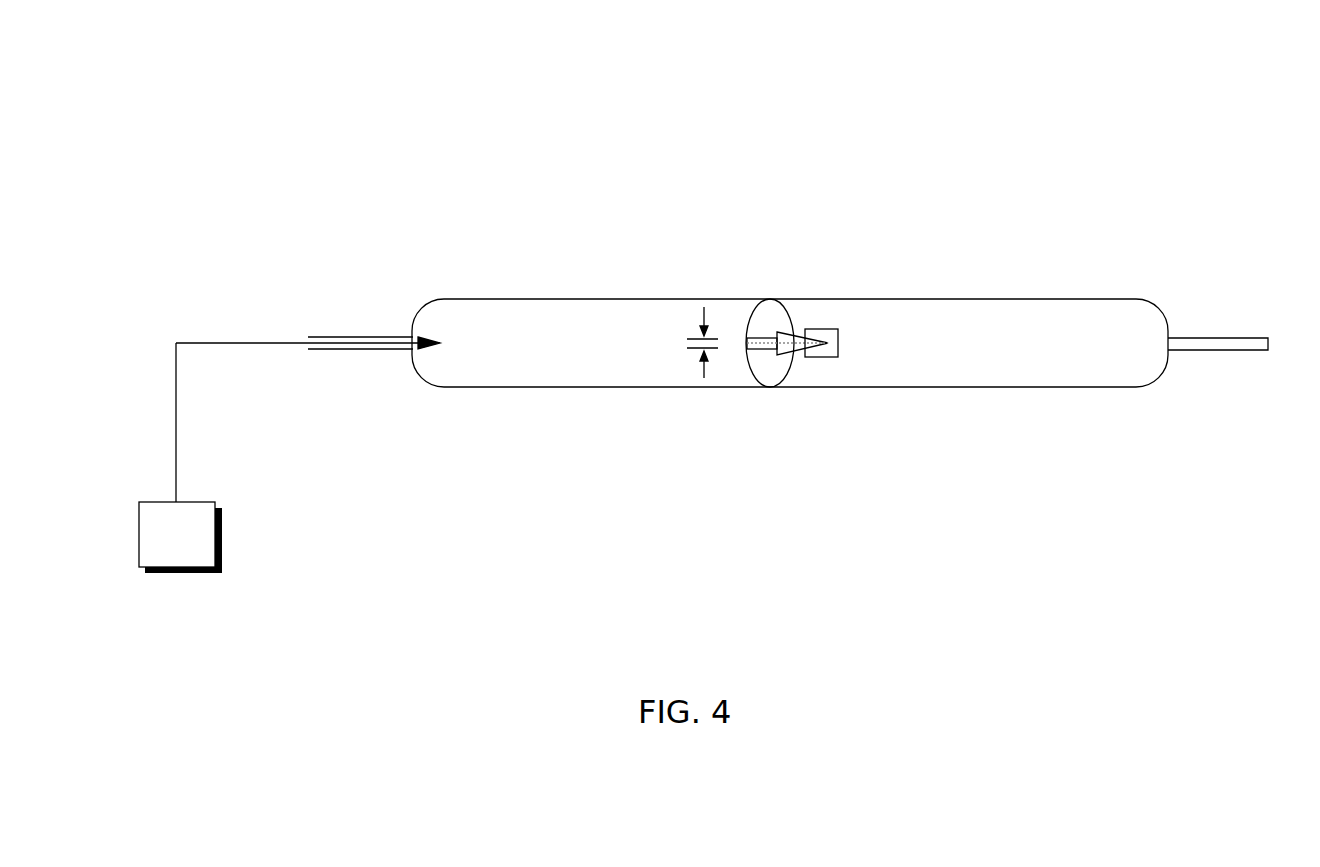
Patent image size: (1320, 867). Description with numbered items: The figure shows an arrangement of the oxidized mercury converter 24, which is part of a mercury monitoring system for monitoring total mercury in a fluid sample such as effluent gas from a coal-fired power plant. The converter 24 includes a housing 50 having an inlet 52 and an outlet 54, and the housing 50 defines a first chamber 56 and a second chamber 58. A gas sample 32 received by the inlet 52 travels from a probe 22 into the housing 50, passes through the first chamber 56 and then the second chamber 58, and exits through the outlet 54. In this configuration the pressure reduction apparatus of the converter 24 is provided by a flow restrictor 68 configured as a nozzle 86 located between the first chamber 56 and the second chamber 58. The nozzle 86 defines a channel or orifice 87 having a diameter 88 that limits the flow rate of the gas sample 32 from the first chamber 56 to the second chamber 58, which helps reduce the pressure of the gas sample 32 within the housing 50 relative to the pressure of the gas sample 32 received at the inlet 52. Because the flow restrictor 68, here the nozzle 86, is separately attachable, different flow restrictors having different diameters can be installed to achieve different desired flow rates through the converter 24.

The converter 24 is at (831, 108).
The housing 50 is at (1080, 299).
The inlet 52 is at (348, 352).
The outlet 54 is at (1208, 352).
The first chamber 56 is at (592, 387).
The second chamber 58 is at (1005, 387).
The flow restrictor 68 is at (807, 357).
The nozzle 86 is at (820, 318).
The orifice 87 is at (748, 325).
The diameter 88 is at (697, 322).
The gas sample 32 is at (237, 342).
The probe 22 is at (180, 537).